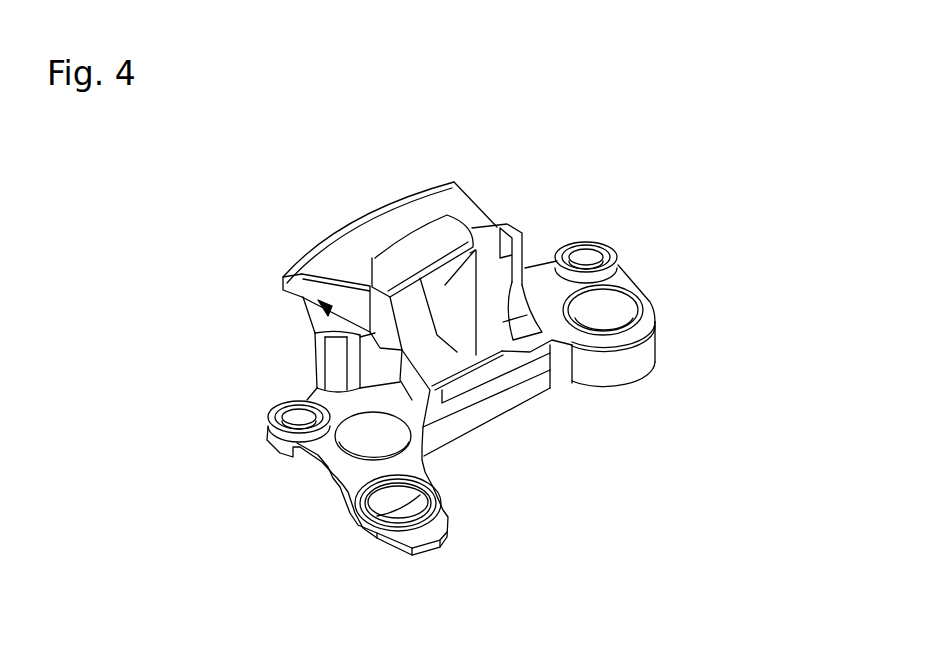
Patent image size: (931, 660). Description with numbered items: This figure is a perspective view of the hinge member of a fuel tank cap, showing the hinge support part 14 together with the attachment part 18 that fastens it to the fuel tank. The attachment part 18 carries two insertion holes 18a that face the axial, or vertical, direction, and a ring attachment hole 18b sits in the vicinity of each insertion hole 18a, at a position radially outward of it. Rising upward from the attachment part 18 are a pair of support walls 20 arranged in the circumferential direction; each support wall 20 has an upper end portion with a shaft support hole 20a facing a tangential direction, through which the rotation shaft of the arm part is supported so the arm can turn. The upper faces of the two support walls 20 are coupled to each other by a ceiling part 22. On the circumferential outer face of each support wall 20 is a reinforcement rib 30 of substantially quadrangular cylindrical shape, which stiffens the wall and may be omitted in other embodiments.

The hinge support part 14 is at (258, 252).
The attachment part 18 is at (643, 277).
The insertion hole 18a is at (660, 337).
The ring attachment hole 18b is at (600, 242).
The support wall 20 is at (453, 312).
The shaft support hole 20a is at (440, 228).
The ceiling part 22 is at (386, 222).
The reinforcement rib 30 is at (512, 234).